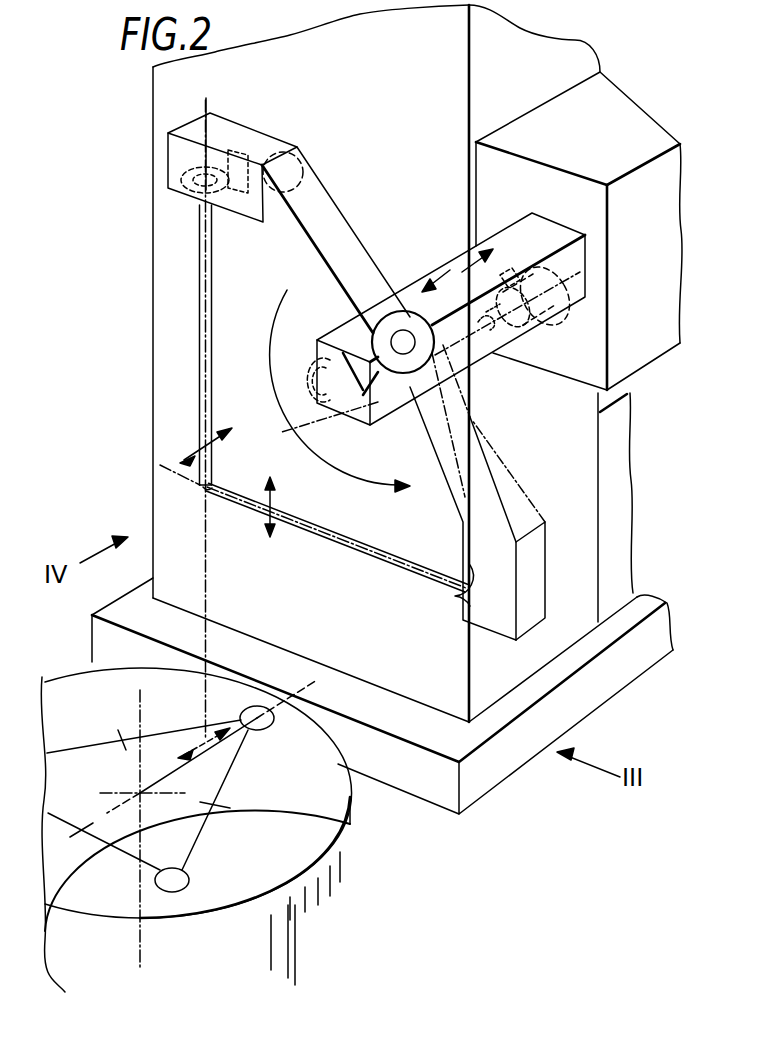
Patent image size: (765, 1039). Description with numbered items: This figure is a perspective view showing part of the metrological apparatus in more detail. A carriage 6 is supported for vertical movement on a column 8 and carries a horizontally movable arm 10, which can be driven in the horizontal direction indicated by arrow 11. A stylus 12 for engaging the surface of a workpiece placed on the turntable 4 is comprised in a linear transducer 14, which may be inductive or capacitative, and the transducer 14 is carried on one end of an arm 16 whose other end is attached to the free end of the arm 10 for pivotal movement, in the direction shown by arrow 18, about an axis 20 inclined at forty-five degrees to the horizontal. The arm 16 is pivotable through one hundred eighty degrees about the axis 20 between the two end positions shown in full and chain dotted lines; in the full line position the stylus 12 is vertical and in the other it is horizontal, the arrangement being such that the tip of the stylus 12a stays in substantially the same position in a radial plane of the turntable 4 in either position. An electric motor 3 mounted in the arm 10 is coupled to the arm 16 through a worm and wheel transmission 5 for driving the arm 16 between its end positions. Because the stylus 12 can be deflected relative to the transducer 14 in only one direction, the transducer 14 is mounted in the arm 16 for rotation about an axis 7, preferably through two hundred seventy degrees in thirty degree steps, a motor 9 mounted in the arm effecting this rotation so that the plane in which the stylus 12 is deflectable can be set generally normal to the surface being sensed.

The electric motor 3 is at (553, 306).
The turntable 4 is at (310, 822).
The worm and wheel transmission 5 is at (358, 413).
The carriage 6 is at (611, 146).
The axis 7 is at (233, 130).
The column 8 is at (396, 115).
The motor 9 is at (302, 172).
The arm 10 is at (414, 287).
The arrow 11 is at (453, 270).
The stylus 12 is at (198, 390).
The tip of the stylus 12a is at (207, 493).
The linear transducer 14 is at (180, 196).
The arm 16 is at (340, 240).
The arrow 18 is at (318, 447).
The axis 20 is at (502, 274).